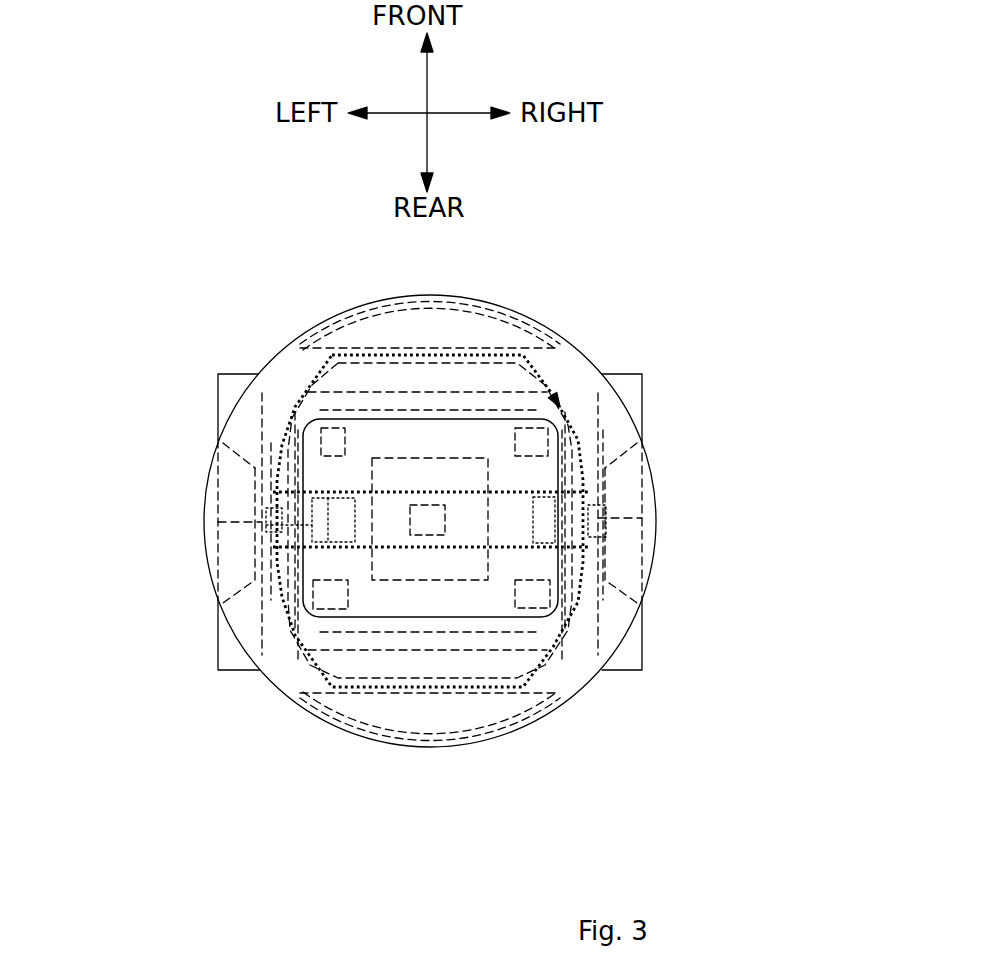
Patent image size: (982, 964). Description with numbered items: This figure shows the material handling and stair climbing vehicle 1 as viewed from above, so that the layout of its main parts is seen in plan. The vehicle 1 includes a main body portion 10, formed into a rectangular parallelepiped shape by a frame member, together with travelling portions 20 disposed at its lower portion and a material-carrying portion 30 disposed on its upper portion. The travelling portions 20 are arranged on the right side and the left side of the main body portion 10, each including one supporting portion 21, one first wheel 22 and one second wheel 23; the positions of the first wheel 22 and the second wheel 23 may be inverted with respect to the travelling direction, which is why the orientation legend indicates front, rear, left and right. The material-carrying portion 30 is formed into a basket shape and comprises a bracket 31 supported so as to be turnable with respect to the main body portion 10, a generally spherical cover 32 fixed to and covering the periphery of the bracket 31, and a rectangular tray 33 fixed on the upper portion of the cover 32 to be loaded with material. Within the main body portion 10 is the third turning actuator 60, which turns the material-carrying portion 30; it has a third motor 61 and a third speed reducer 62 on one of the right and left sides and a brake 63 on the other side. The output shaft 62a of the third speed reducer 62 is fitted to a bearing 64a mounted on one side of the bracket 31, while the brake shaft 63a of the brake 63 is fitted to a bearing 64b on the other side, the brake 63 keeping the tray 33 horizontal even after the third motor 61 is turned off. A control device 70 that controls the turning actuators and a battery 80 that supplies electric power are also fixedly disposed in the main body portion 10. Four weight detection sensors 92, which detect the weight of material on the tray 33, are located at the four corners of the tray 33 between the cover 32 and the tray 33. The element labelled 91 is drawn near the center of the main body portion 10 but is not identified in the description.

The material handling and stair climbing vehicle 1 is at (637, 197).
The main body portion 10 is at (600, 373).
The travelling portions 20 is at (115, 447).
The supporting portion 21 is at (255, 476).
The first wheel 22 is at (228, 404).
The second wheel 23 is at (230, 636).
The material-carrying portion 30 is at (611, 760).
The bracket 31 is at (433, 690).
The cover 32 is at (512, 733).
The tray 33 is at (477, 600).
The third turning actuator 60 is at (160, 300).
The third motor 61 is at (348, 510).
The third speed reducer 62 is at (318, 507).
The output shaft 62a is at (313, 497).
The brake 63 is at (552, 560).
The brake shaft 63a is at (547, 530).
The bearing 64a is at (293, 490).
The bearing 64b is at (560, 517).
The control device 70 is at (463, 425).
The battery 80 is at (392, 458).
The controller 91 is at (423, 500).
The weight detection sensors 92 is at (318, 350).